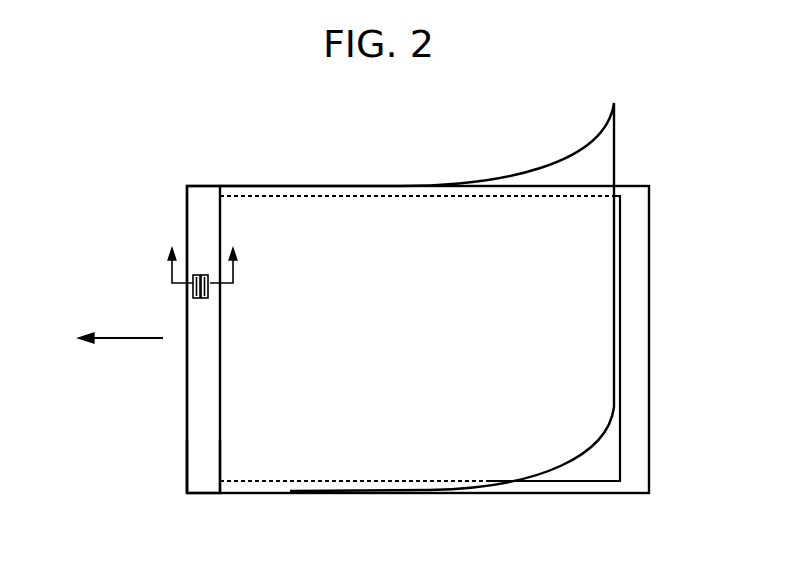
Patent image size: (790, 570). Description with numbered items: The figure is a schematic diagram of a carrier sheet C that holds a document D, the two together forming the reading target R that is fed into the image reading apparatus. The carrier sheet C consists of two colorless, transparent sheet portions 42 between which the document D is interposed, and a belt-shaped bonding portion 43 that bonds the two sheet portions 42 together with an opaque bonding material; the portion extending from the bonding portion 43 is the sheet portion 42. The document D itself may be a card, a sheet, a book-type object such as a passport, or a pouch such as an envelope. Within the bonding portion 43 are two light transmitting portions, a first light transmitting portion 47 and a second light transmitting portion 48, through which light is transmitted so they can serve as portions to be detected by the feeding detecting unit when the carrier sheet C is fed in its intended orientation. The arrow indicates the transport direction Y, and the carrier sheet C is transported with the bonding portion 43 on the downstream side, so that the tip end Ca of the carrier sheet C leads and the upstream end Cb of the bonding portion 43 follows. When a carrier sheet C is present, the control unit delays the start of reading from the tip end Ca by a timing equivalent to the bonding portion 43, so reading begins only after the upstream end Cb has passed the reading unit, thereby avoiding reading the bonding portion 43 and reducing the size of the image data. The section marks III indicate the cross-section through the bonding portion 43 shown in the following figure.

The sheet portion 42 is at (616, 140).
The bonding portion 43 is at (203, 190).
The first light transmitting portion 47 is at (193, 296).
The second light transmitting portion 48 is at (207, 292).
The document D is at (622, 300).
The tip end Ca is at (187, 465).
The upstream end Cb is at (221, 483).
The carrier sheet C is at (353, 292).
The reading target R is at (103, 153).
The transport direction Y is at (120, 353).
The section line III is at (203, 254).